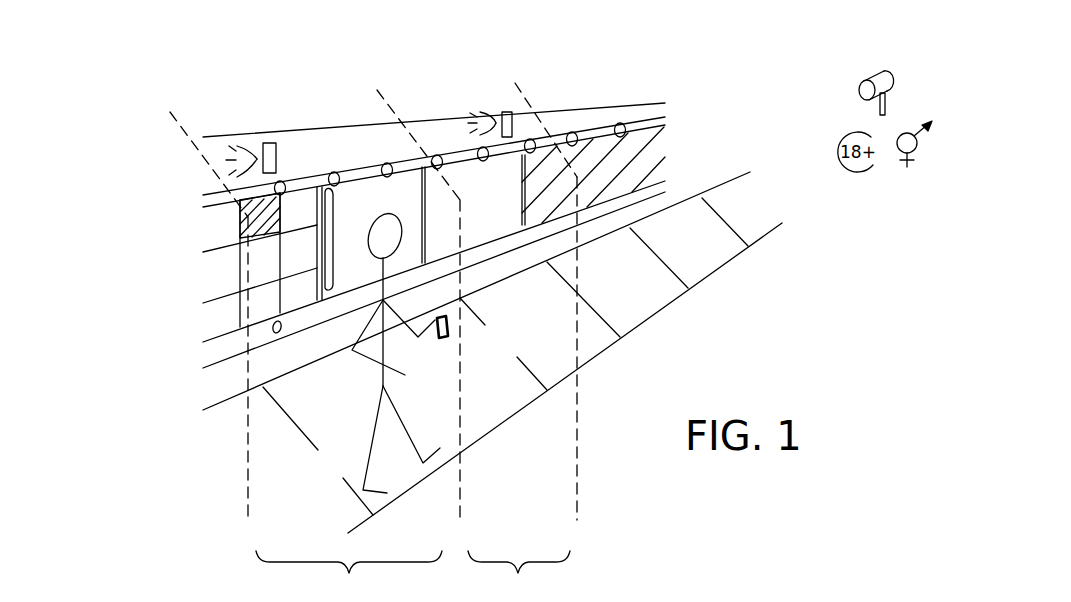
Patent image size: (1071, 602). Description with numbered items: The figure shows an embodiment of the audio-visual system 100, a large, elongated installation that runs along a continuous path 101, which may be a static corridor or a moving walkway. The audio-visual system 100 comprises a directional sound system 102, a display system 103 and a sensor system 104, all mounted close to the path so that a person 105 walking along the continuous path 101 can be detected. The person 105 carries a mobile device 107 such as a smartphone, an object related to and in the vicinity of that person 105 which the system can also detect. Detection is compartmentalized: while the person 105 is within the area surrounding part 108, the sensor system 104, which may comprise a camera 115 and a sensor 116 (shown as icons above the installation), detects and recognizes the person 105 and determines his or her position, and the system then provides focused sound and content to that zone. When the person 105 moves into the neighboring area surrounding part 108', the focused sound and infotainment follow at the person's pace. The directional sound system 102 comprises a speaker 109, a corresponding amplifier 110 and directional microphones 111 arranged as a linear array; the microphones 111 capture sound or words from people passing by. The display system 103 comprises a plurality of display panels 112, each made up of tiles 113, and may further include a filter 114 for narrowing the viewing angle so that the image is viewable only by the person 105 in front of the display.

The audio-visual system 100 is at (128, 70).
The continuous path 101 is at (658, 295).
The directional sound system 102 is at (195, 161).
The display system 103 is at (197, 279).
The sensor system 104 is at (200, 353).
The person 105 is at (370, 438).
The mobile device 107 is at (447, 337).
The area surrounding part 108 is at (315, 346).
The neighboring area surrounding part 108' is at (522, 342).
The speaker 109 is at (250, 144).
The amplifier 110 is at (270, 142).
The directional microphones 111 is at (388, 163).
The display panel 112 is at (334, 243).
The tile 113 is at (238, 218).
The filter 114 is at (638, 150).
The camera 115 is at (885, 72).
The sensor 116 is at (278, 334).